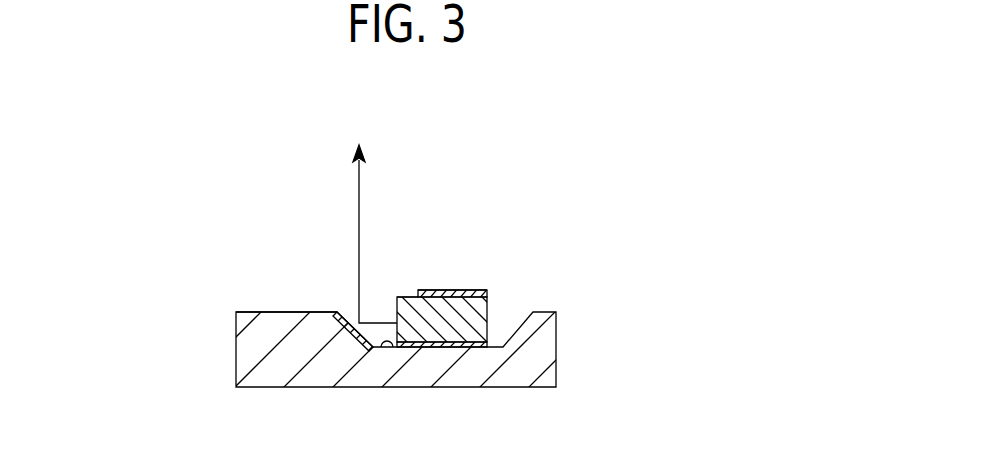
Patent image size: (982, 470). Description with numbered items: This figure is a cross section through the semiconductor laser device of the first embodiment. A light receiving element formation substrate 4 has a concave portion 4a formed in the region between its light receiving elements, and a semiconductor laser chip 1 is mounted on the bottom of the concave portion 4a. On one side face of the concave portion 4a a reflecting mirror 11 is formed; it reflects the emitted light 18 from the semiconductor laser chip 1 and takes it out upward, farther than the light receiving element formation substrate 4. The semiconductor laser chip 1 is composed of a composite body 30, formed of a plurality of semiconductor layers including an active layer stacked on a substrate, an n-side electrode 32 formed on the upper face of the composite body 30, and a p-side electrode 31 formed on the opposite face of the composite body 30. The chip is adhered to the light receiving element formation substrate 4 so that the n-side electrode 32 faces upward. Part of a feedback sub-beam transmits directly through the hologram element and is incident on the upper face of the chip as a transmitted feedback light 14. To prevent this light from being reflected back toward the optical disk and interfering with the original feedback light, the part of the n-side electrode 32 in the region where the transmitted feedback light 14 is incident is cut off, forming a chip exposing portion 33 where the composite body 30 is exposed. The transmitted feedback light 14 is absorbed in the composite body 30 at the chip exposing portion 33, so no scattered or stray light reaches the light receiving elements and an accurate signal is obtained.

The semiconductor laser chip 1 is at (492, 274).
The light receiving element formation substrate 4 is at (556, 340).
The concave portion 4a is at (392, 348).
The reflecting mirror 11 is at (342, 311).
The transmitted feedback light 14 is at (298, 312).
The emitted light 18 is at (360, 175).
The composite body 30 is at (488, 320).
The p-side electrode 31 is at (488, 343).
The n-side electrode 32 is at (489, 292).
The chip exposing portion 33 is at (418, 290).